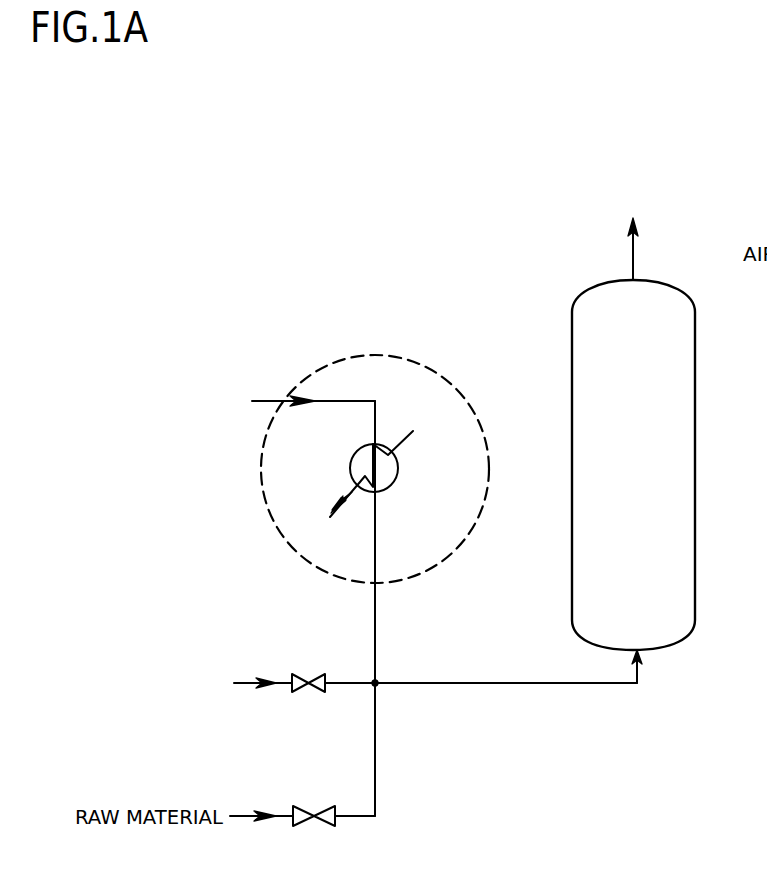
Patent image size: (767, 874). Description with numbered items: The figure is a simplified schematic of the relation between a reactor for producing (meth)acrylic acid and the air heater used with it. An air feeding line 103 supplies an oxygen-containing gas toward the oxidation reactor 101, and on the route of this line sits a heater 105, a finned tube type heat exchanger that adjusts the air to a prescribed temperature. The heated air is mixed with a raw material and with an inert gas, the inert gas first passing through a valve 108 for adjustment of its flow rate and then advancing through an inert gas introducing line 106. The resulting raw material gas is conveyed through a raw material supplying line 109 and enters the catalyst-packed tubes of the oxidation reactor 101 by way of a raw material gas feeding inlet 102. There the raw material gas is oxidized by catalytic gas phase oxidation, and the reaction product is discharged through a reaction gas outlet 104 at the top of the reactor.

The oxidation reactor 101 is at (683, 388).
The raw material gas feeding inlet 102 is at (641, 651).
The air feeding line 103 is at (339, 398).
The reaction gas outlet 104 is at (634, 278).
The heater 105 is at (390, 481).
The inert gas introducing line 106 is at (347, 681).
The valve 108 is at (310, 686).
The raw material supplying line 109 is at (473, 684).